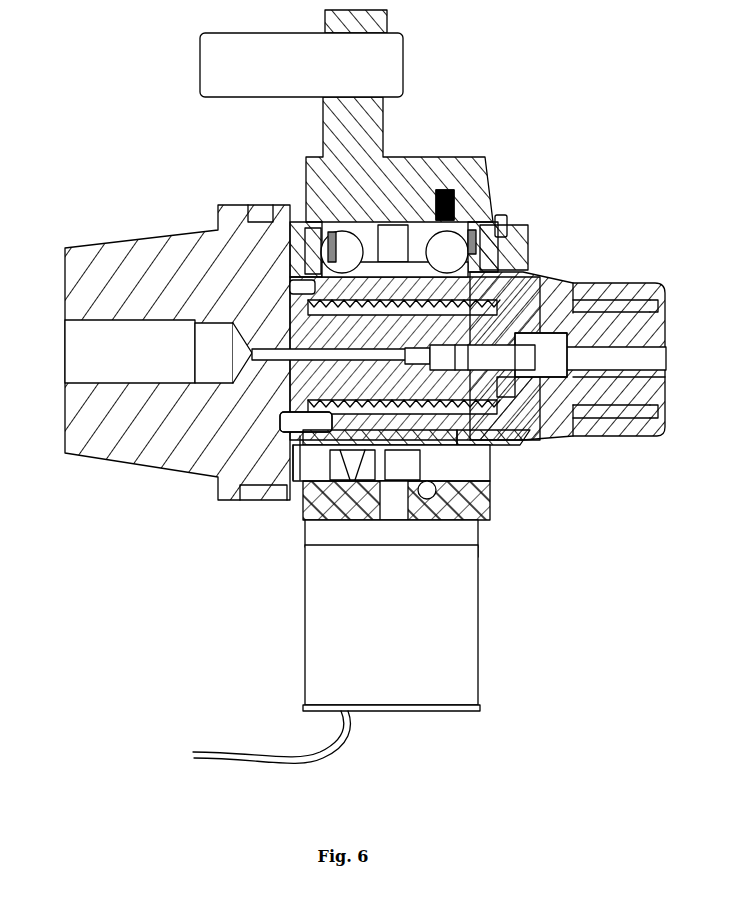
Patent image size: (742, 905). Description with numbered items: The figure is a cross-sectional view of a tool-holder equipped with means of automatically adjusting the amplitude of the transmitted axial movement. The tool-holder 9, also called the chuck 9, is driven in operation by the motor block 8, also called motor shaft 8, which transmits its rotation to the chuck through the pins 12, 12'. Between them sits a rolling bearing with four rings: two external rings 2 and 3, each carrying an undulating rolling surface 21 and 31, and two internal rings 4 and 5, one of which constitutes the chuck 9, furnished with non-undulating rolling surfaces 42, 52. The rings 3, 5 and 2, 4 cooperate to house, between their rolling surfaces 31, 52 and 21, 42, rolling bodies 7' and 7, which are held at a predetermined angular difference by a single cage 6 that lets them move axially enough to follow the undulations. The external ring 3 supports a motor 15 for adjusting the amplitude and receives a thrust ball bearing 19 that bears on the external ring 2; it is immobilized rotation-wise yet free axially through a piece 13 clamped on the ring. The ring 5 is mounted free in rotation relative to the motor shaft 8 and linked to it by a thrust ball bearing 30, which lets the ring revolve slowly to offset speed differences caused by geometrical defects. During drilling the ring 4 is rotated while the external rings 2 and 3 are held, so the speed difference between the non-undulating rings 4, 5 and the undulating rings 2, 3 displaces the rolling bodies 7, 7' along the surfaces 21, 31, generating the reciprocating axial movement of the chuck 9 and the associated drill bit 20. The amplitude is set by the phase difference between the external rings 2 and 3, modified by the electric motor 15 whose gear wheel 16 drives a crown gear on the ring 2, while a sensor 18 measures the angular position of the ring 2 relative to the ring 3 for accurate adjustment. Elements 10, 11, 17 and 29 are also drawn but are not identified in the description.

The external ring 2 is at (445, 462).
The external ring 3 is at (358, 127).
The internal ring 4 is at (502, 422).
The internal ring 5 is at (313, 267).
The cage 6 is at (465, 428).
The rolling bodies 7 is at (502, 210).
The rolling bodies 7' is at (260, 185).
The motor shaft 8 is at (155, 420).
The tool-holder 9 is at (525, 360).
The connector body 10 is at (618, 288).
The connector bore 11 is at (612, 385).
The pin 12 is at (311, 326).
The pin 12' is at (234, 471).
The piece 13 is at (352, 62).
The motor 15 is at (395, 598).
The gear wheel 16 is at (390, 473).
The pin 17 is at (507, 342).
The sensor 18 is at (453, 272).
The thrust ball bearing 19 is at (423, 215).
The drill bit 20 is at (447, 237).
The undulating rolling surface 21 is at (427, 490).
The sleeve 29 is at (512, 386).
The thrust ball bearing 30 is at (293, 438).
The undulating rolling surface 31 is at (355, 473).
The non-undulating rolling surface 42 is at (470, 258).
The non-undulating rolling surface 52 is at (333, 264).